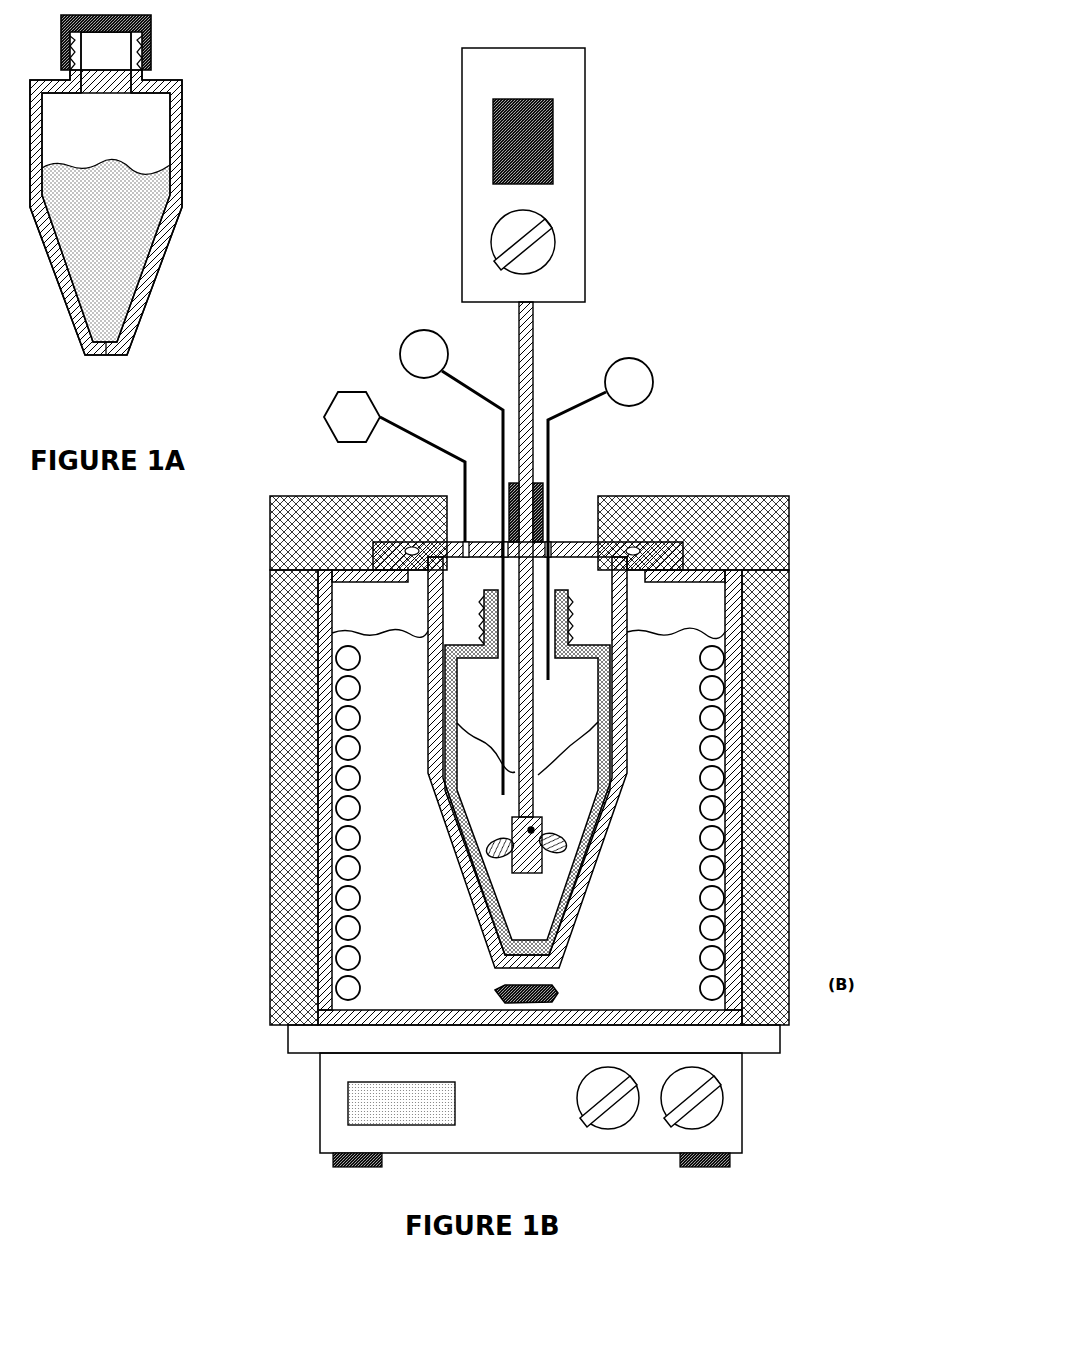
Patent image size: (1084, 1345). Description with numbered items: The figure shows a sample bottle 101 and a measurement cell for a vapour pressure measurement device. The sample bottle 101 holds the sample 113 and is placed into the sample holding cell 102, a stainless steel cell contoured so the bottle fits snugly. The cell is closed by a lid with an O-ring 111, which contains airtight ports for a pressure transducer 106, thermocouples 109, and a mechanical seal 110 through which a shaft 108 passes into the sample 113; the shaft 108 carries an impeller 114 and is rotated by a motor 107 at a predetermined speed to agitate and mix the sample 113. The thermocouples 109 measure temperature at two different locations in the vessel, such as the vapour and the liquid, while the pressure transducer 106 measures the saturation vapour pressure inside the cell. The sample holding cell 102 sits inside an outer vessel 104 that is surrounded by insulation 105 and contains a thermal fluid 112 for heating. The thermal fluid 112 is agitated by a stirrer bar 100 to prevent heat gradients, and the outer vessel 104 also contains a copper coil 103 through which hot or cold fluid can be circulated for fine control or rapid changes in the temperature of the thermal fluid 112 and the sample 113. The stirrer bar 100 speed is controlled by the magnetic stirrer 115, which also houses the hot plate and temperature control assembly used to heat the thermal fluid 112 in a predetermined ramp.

The stirrer bar 100 is at (495, 993).
The sample bottle 101 is at (478, 848).
The sample holding cell 102 is at (440, 808).
The copper coil 103 is at (348, 785).
The outer vessel 104 is at (325, 745).
The insulation 105 is at (290, 628).
The pressure transducer 106 is at (322, 413).
The motor 107 is at (575, 115).
The shaft 108 is at (535, 325).
The thermocouples 109 is at (661, 380).
The mechanical seal 110 is at (548, 497).
The lid with an O-ring 111 is at (690, 543).
The thermal fluid 112 is at (670, 722).
The sample 113 is at (578, 768).
The impeller 114 is at (542, 832).
The magnetic stirrer 115 is at (750, 1094).